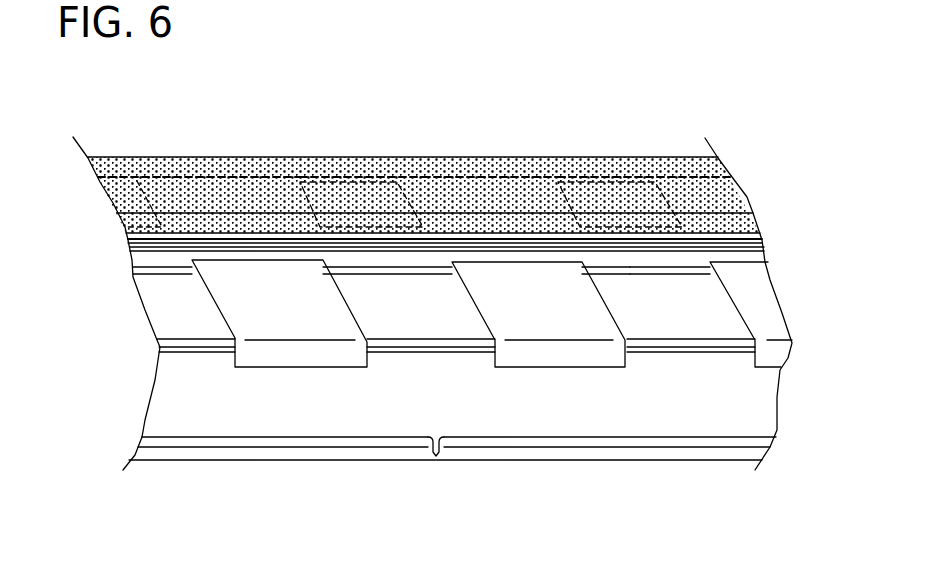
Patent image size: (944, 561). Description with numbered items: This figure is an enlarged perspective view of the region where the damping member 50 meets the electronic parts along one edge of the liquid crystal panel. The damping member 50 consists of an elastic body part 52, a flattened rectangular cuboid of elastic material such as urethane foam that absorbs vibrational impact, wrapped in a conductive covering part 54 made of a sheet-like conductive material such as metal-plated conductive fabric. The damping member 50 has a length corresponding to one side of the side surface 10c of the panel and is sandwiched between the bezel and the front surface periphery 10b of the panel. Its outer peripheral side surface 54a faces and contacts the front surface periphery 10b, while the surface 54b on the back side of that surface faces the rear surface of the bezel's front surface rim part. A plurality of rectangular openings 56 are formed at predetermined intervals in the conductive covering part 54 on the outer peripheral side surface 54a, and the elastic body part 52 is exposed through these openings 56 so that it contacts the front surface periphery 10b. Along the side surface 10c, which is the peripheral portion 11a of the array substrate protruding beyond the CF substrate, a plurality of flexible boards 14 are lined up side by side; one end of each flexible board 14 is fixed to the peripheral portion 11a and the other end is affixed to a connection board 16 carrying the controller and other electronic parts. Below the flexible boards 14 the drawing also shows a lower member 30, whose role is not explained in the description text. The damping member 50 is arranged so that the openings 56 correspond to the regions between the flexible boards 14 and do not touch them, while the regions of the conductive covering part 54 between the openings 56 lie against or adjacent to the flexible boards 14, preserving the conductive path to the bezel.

The damping member 50 is at (668, 125).
The conductive covering part 54 is at (152, 156).
The outer peripheral side surface 54a is at (232, 207).
The outer peripheral side surface 54b is at (510, 190).
The elastic body part 52 is at (331, 193).
The opening 56 is at (613, 176).
The front surface periphery 10b is at (148, 239).
The side surface 10c is at (156, 276).
The peripheral portion 11a is at (692, 262).
The flexible board 14 is at (305, 355).
The base member 30 is at (723, 327).
The connection board 16 is at (462, 403).